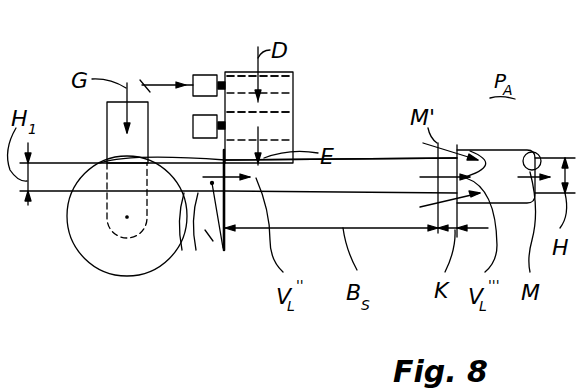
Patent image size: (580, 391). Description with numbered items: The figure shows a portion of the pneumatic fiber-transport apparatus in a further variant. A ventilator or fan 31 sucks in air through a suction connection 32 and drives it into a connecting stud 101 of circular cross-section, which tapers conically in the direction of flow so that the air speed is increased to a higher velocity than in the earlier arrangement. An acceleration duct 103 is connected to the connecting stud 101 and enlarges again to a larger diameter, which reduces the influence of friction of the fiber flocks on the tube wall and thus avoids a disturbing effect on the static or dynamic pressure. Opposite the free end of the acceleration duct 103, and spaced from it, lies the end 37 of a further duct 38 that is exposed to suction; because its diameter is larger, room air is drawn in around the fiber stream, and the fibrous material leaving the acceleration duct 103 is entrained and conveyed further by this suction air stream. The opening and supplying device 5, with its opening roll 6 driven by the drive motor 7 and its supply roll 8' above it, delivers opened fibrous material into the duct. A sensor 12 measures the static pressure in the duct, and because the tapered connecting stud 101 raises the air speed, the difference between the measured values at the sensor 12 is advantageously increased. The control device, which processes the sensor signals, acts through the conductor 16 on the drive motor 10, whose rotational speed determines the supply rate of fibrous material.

The opening and supplying device 5 is at (293, 102).
The opening roll 6 is at (285, 130).
The drive motor 7 is at (198, 126).
The supply roll 8' is at (281, 62).
The drive motor 10 is at (206, 83).
The sensor 12 is at (212, 183).
The conductor 16 is at (167, 83).
The ventilator 31 is at (110, 275).
The suction connection 32 is at (107, 120).
The end of further duct 37 is at (490, 156).
The further duct 38 is at (512, 149).
The connecting stud 101 is at (193, 240).
The acceleration duct 103 is at (352, 158).